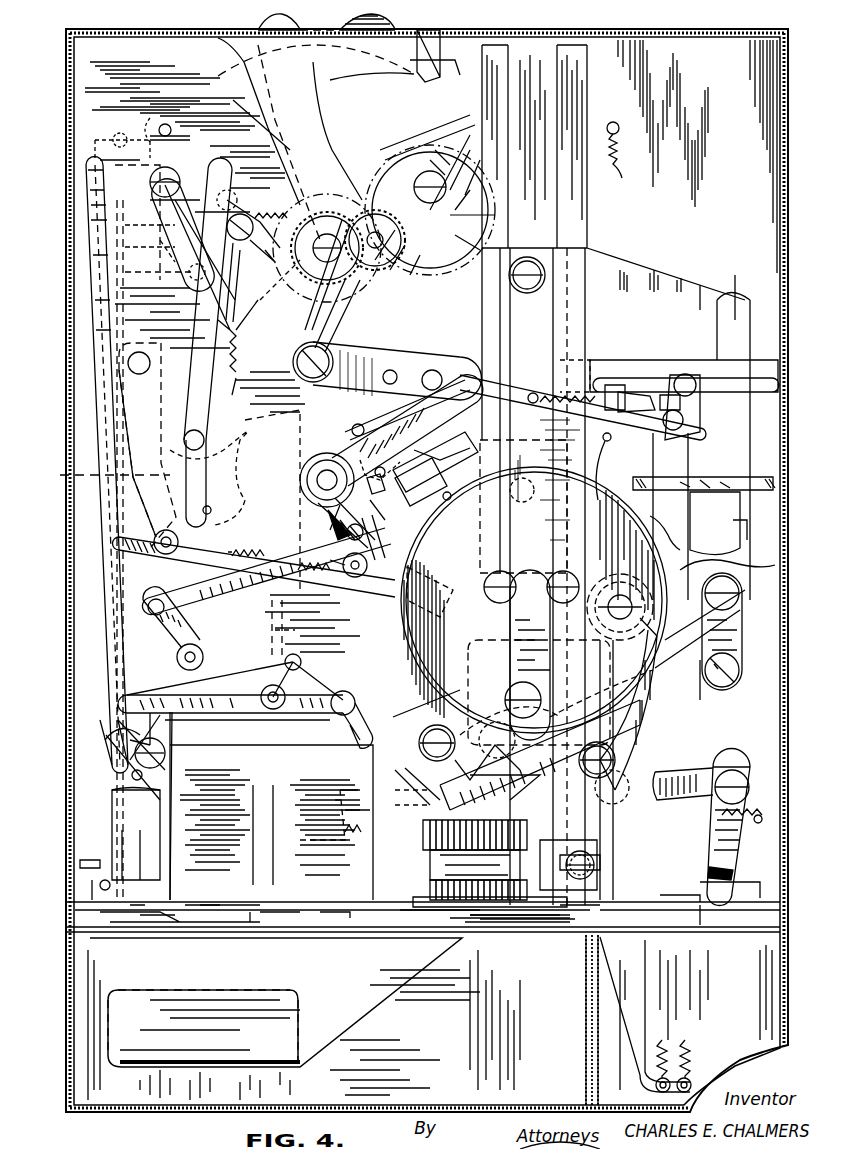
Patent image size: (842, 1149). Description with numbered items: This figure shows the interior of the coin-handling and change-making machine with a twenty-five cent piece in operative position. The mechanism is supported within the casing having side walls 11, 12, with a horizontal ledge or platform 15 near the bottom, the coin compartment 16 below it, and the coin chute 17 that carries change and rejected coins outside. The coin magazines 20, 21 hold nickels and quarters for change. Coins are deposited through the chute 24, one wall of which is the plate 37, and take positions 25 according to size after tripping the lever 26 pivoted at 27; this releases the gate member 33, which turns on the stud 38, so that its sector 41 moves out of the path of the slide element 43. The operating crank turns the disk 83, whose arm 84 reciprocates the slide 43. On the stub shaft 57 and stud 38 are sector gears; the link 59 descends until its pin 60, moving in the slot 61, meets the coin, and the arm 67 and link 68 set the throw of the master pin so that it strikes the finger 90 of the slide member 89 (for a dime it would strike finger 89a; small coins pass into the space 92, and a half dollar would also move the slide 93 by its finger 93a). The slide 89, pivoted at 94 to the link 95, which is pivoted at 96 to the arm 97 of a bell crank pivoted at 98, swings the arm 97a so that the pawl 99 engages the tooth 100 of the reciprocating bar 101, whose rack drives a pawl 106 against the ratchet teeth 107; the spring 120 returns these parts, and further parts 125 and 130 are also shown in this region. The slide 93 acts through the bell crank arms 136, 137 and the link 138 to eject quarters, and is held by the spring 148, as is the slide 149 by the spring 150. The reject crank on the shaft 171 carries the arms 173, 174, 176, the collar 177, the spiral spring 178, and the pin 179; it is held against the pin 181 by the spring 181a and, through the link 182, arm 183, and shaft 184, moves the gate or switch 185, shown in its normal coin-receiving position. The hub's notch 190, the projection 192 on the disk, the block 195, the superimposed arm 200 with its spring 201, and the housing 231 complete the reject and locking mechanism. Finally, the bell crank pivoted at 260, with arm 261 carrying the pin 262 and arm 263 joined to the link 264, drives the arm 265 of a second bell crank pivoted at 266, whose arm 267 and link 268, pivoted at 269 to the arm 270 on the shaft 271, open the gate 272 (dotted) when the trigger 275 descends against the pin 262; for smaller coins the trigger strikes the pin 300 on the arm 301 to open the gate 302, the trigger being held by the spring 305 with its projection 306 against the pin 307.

The side wall 11 is at (788, 326).
The side wall 12 is at (66, 826).
The horizontal ledge or platform 15 is at (552, 935).
The coin compartment 16 is at (569, 1014).
The coin chute 17 is at (382, 996).
The coin magazine 20 is at (385, 800).
The coin magazine 21 is at (122, 822).
The coin chute 24 is at (388, 20).
The coin positions 25 is at (66, 475).
The trip lever 26 is at (190, 290).
The pivot 27 is at (160, 140).
The gate member 33 is at (208, 550).
The plate 37 is at (316, 139).
The stud 38 is at (330, 240).
The sector 41 is at (440, 80).
The slide element 43 is at (615, 275).
The stub shaft 57 is at (432, 185).
The link 59 is at (212, 332).
The pin 60 is at (186, 440).
The slot 61 is at (202, 514).
The arm 67 is at (338, 322).
The link 68 is at (356, 392).
The disk 83 is at (445, 700).
The arm 84 is at (518, 530).
The slide member 89 is at (732, 580).
The finger 89a is at (740, 535).
The finger 90 is at (680, 512).
The space 92 is at (727, 559).
The reciprocating slide 93 is at (607, 466).
The finger 93a is at (670, 536).
The pivot 94 is at (734, 605).
The link 95 is at (739, 662).
The pivot point 96 is at (733, 680).
The arm of bell crank lever 97 is at (643, 704).
The arm of bell crank lever 97a is at (616, 754).
The pivot 98 is at (545, 655).
The pawl 99 is at (518, 790).
The tooth 100 is at (440, 770).
The reciprocating bar 101 is at (428, 822).
The pawl 106 is at (440, 872).
The ratchet teeth 107 is at (555, 848).
The spring 120 is at (748, 822).
The rack 125 is at (484, 918).
The spring 130 is at (628, 159).
The bell crank arm 136 is at (700, 790).
The bell crank arm 137 is at (735, 857).
The link 138 is at (745, 902).
The spring 148 is at (660, 1040).
The slide 149 is at (740, 445).
The spring 150 is at (688, 1052).
The shaft 171 is at (318, 484).
The arm 173 is at (345, 456).
The arm 174 is at (370, 540).
The arm 176 is at (430, 427).
The collar 177 is at (300, 469).
The spiral spring 178 is at (382, 468).
The pin 179 is at (362, 430).
The pin 181 is at (345, 575).
The spring 181a is at (345, 580).
The link 182 is at (255, 578).
The arm 183 is at (178, 624).
The shaft 184 is at (203, 657).
The gate or switch 185 is at (160, 572).
The notch 190 is at (331, 523).
The projection 192 is at (565, 690).
The block 195 is at (390, 500).
The arm or link 200 is at (418, 380).
The spring 201 is at (570, 390).
The housing 231 is at (450, 455).
The pivot 260 is at (172, 176).
The arm 261 is at (160, 222).
The pin 262 is at (144, 248).
The arm 263 is at (115, 160).
The link 264 is at (86, 182).
The arm 265 is at (112, 735).
The pivot 266 is at (162, 762).
The arm 267 is at (175, 740).
The link 268 is at (222, 690).
The pivot 269 is at (305, 664).
The arm 270 is at (290, 690).
The shaft 271 is at (283, 720).
The gate or switch 272 is at (290, 634).
The arm or trigger 275 is at (228, 295).
The pin 300 is at (158, 270).
The arm 301 is at (200, 210).
The gate 302 is at (355, 703).
The spring 305 is at (255, 216).
The projection 306 is at (375, 215).
The pin 307 is at (258, 248).